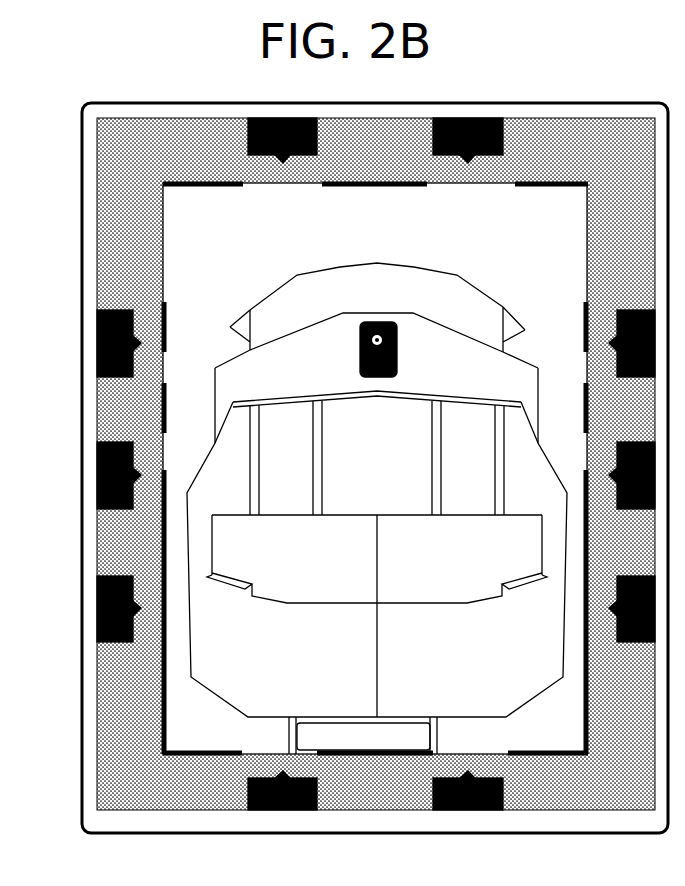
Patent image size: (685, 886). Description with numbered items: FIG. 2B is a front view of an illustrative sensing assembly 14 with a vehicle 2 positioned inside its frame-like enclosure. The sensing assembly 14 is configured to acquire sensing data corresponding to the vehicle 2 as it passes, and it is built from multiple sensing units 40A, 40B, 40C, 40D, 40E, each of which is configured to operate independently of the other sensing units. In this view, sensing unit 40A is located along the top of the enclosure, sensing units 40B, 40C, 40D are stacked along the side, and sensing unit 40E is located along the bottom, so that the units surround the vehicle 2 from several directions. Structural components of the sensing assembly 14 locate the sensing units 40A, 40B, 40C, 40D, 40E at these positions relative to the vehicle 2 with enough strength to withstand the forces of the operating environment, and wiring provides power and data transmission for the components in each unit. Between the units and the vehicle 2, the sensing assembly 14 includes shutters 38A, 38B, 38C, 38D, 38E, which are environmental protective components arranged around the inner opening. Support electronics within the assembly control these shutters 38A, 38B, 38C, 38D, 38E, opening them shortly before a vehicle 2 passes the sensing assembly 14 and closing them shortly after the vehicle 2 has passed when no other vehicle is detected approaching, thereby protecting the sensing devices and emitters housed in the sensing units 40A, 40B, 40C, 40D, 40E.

The vehicle 2 is at (363, 263).
The sensing assembly 14 is at (146, 103).
The shutter 38A is at (281, 189).
The shutter 38B is at (166, 319).
The shutter 38C is at (167, 455).
The shutter 38D is at (165, 640).
The shutter 38E is at (270, 752).
The sensing unit 40A is at (282, 118).
The sensing unit 40B is at (96, 338).
The sensing unit 40C is at (96, 470).
The sensing unit 40D is at (96, 603).
The sensing unit 40E is at (296, 810).